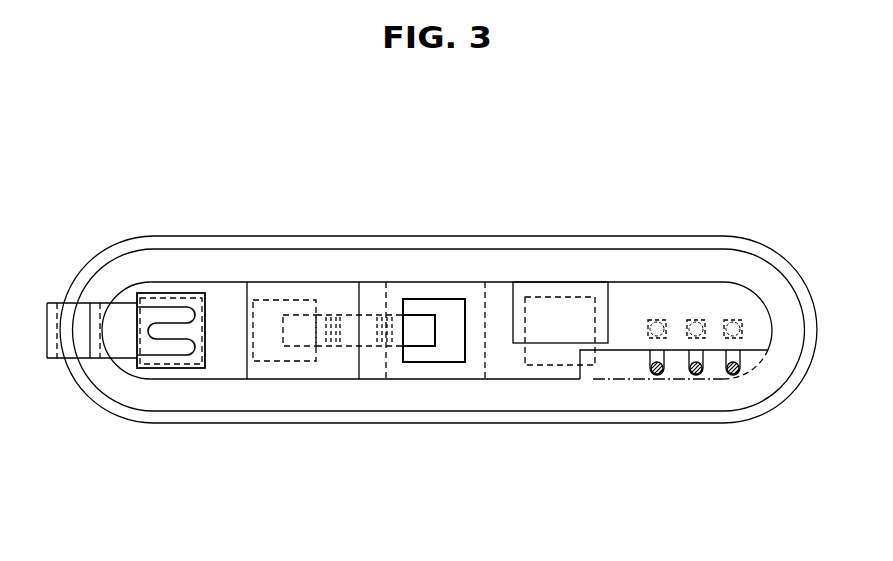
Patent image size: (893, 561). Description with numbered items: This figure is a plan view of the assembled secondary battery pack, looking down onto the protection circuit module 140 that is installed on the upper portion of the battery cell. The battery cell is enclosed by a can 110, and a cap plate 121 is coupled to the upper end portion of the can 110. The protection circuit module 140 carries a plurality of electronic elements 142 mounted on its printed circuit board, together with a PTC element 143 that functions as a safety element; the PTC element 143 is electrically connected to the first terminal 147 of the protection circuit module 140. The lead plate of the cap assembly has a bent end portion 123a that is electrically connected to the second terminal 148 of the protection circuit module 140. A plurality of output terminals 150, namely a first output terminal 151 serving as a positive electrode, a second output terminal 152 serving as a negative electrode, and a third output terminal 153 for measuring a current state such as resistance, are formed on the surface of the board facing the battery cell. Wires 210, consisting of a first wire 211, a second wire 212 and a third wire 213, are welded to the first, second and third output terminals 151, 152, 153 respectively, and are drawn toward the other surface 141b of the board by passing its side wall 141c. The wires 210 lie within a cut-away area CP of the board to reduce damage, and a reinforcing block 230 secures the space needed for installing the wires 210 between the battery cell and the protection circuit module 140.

The can 110 is at (790, 264).
The cap plate 121 is at (422, 237).
The end portion of lead plate 123a is at (167, 310).
The reinforcing block 230 is at (196, 298).
The first terminal 147 is at (288, 300).
The PTC element 143 is at (351, 296).
The protection circuit module 140 is at (502, 282).
The other surface of PCB 141b is at (513, 370).
The side wall of PCB 141c is at (608, 352).
The electronic elements 142 is at (304, 379).
The second terminal 148 is at (170, 368).
The output terminals 150 is at (694, 224).
The first output terminal 151 is at (657, 320).
The second output terminal 152 is at (733, 320).
The third output terminal 153 is at (696, 320).
The wires 210 is at (706, 445).
The first wire 211 is at (657, 376).
The second wire 212 is at (734, 376).
The third wire 213 is at (696, 376).
The cut-away area CP is at (765, 385).